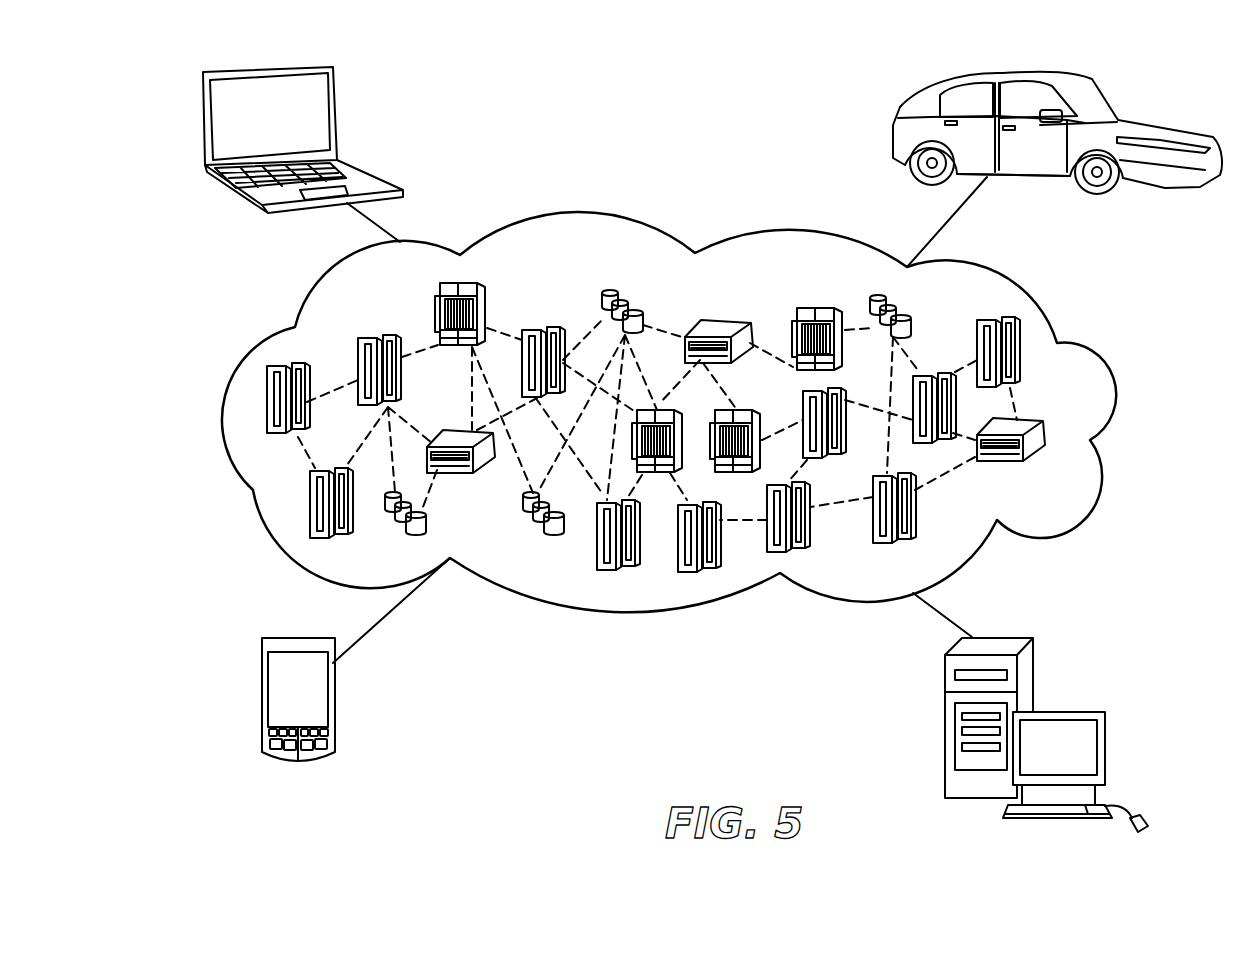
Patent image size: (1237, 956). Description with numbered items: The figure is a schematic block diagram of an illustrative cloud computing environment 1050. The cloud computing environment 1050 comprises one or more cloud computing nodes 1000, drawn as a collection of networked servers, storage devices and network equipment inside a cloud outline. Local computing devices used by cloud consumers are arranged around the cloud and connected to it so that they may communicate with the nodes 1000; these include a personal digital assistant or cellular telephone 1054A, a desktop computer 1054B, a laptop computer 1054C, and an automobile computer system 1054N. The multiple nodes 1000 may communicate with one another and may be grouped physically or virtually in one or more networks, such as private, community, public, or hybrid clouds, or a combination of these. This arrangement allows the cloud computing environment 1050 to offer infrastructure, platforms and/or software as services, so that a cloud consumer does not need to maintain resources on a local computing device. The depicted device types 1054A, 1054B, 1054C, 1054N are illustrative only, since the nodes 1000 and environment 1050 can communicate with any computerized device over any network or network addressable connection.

The cloud computing node 1000 is at (1046, 459).
The cloud computing environment 1050 is at (1095, 372).
The personal digital assistant or cellular telephone 1054A is at (320, 703).
The desktop computer 1054B is at (1100, 745).
The laptop computer 1054C is at (320, 122).
The automobile computer system 1054N is at (898, 138).